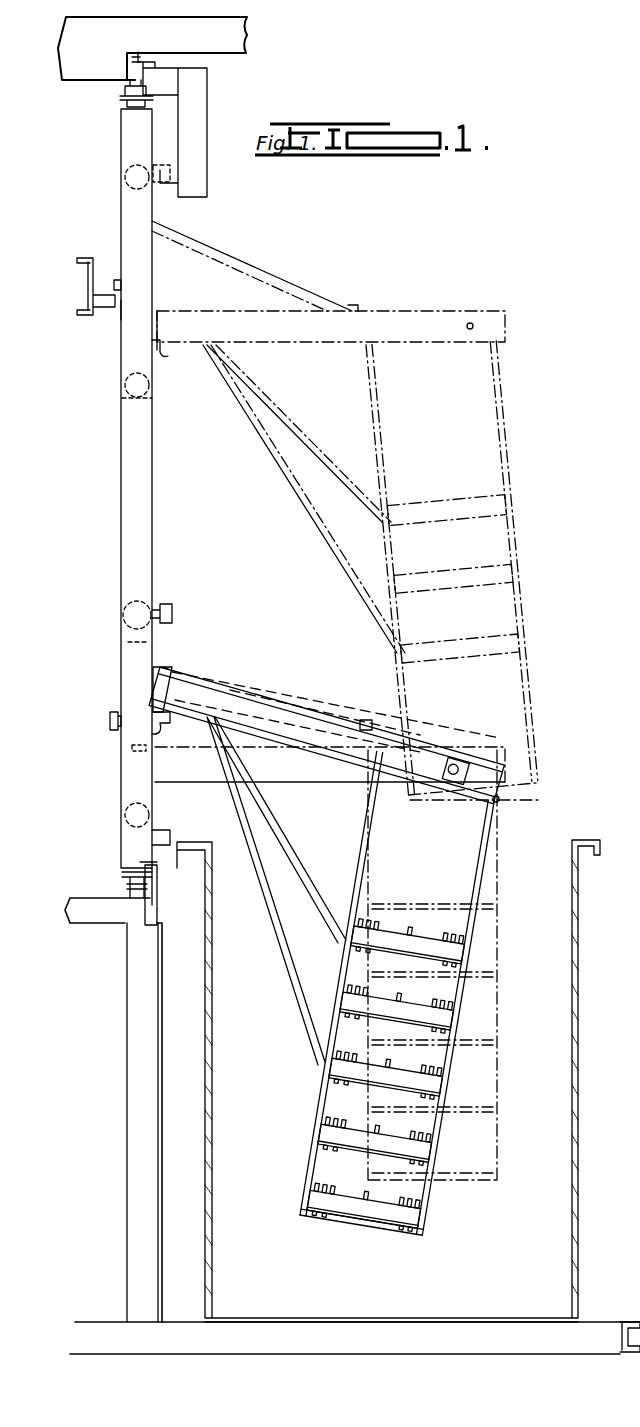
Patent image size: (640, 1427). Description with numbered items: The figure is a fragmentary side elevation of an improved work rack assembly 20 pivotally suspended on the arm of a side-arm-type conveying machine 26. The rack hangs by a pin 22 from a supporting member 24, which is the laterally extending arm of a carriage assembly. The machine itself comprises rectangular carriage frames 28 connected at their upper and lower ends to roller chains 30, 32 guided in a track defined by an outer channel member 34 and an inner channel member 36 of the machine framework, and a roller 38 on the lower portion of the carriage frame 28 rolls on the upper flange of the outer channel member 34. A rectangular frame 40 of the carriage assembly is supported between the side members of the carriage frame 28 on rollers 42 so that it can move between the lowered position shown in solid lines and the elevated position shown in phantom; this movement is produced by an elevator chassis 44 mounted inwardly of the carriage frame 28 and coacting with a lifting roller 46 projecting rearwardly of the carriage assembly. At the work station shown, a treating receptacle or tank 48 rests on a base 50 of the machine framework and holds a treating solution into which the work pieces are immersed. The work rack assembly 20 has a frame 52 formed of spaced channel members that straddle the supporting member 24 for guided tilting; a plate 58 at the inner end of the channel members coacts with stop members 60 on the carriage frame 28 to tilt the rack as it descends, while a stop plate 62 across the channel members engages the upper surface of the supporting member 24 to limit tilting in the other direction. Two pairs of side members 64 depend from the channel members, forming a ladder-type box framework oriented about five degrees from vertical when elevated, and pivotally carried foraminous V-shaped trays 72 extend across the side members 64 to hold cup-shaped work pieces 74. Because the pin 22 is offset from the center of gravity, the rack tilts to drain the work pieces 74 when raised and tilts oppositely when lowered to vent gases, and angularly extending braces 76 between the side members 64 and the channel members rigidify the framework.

The work rack assembly 20 is at (439, 760).
The pin 22 is at (470, 322).
The supporting member 24 is at (375, 315).
The side-arm-type conveying machine 26 is at (117, 558).
The carriage frame 28 is at (140, 480).
The roller chain 30 is at (120, 98).
The roller chain 32 is at (140, 905).
The outer channel member 34 is at (145, 80).
The inner channel member 36 is at (128, 55).
The roller 38 is at (167, 840).
The rectangular frame 40 is at (138, 153).
The rollers 42 is at (130, 385).
The elevator chassis 44 is at (90, 280).
The lifting roller 46 is at (110, 268).
The treating receptacle or tank 48 is at (213, 1045).
The base 50 is at (265, 1330).
The frame 52 is at (280, 705).
The plate 58 is at (160, 355).
The stop members 60 is at (150, 735).
The stop plate 62 is at (352, 300).
The side members 64 is at (530, 630).
The foraminous V-shaped tray 72 is at (430, 1020).
The work pieces 74 is at (480, 565).
The braces 76 is at (335, 490).